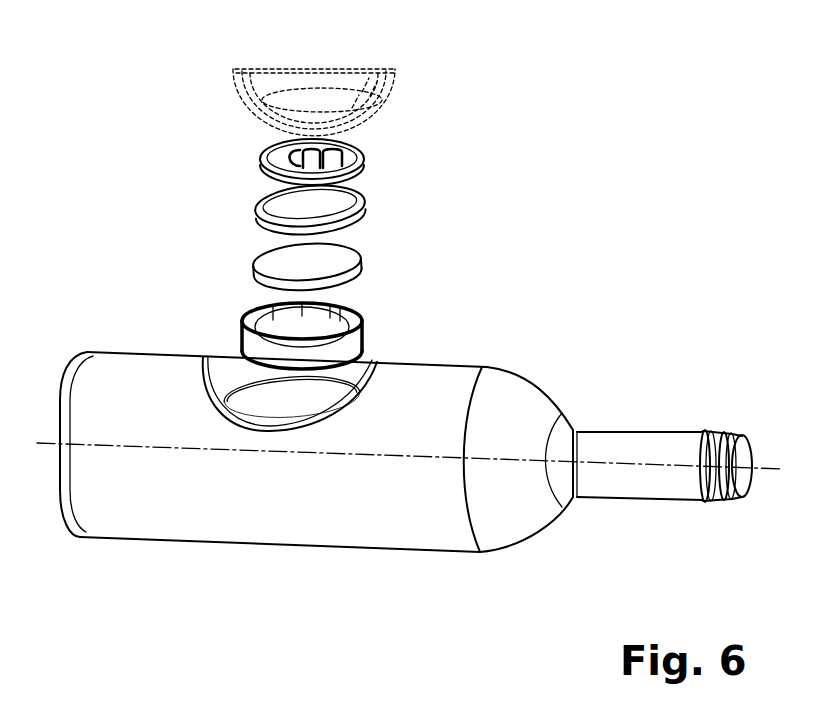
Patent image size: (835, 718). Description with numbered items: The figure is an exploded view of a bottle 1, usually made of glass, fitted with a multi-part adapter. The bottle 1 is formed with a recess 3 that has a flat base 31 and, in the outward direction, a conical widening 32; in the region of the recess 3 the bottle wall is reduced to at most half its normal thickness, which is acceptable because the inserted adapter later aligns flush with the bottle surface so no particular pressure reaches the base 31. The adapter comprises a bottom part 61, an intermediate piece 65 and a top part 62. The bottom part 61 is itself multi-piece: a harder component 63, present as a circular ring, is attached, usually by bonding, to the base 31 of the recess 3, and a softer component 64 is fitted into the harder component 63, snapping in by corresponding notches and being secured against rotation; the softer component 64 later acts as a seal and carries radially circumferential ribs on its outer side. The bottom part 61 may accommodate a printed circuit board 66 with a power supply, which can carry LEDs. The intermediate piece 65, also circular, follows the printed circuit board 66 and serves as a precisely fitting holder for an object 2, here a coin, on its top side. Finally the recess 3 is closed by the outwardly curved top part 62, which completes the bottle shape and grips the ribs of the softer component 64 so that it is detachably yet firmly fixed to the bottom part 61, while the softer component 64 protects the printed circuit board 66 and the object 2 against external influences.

The bottle 1 is at (425, 530).
The object 2 is at (363, 155).
The recess 3 is at (205, 475).
The flat base 31 is at (277, 410).
The conical widening 32 is at (222, 373).
The bottom part 61 is at (338, 199).
The top part 62 is at (382, 70).
The harder component 63 is at (391, 334).
The softer component 64 is at (363, 320).
The intermediate piece 65 is at (332, 204).
The printed circuit board 66 is at (323, 261).